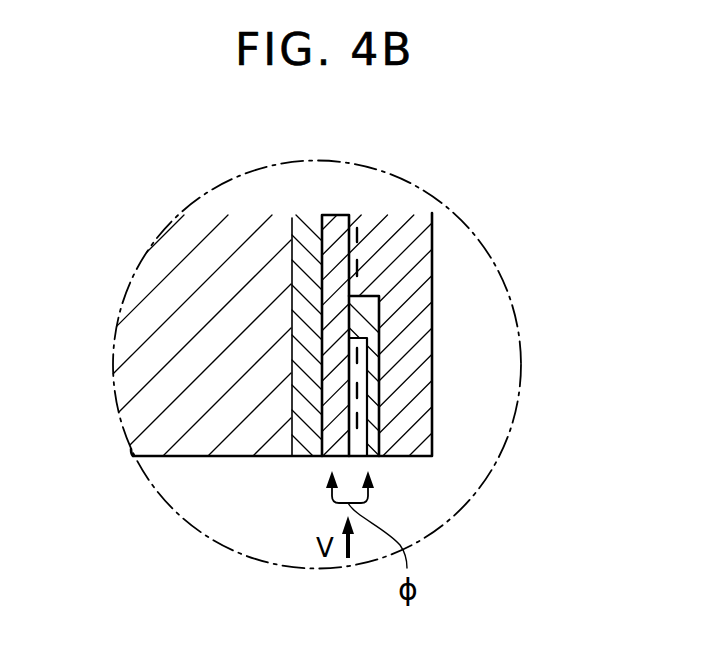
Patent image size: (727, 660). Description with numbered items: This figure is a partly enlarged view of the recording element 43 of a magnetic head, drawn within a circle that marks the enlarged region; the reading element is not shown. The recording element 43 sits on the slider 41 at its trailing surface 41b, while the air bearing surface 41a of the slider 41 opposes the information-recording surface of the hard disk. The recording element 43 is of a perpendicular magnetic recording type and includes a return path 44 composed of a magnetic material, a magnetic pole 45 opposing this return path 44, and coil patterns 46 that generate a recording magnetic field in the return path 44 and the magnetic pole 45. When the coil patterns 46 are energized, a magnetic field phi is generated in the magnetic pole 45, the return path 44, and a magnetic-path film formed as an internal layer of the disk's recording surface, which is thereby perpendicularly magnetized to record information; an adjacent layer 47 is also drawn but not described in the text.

The slider 41 is at (172, 457).
The air bearing surface 41a is at (228, 458).
The trailing surface 41b is at (292, 404).
The recording element 43 is at (452, 439).
The return path 44 is at (333, 307).
The magnetic pole 45 is at (377, 423).
The coil patterns 46 is at (357, 268).
The covering layer 47 is at (425, 380).